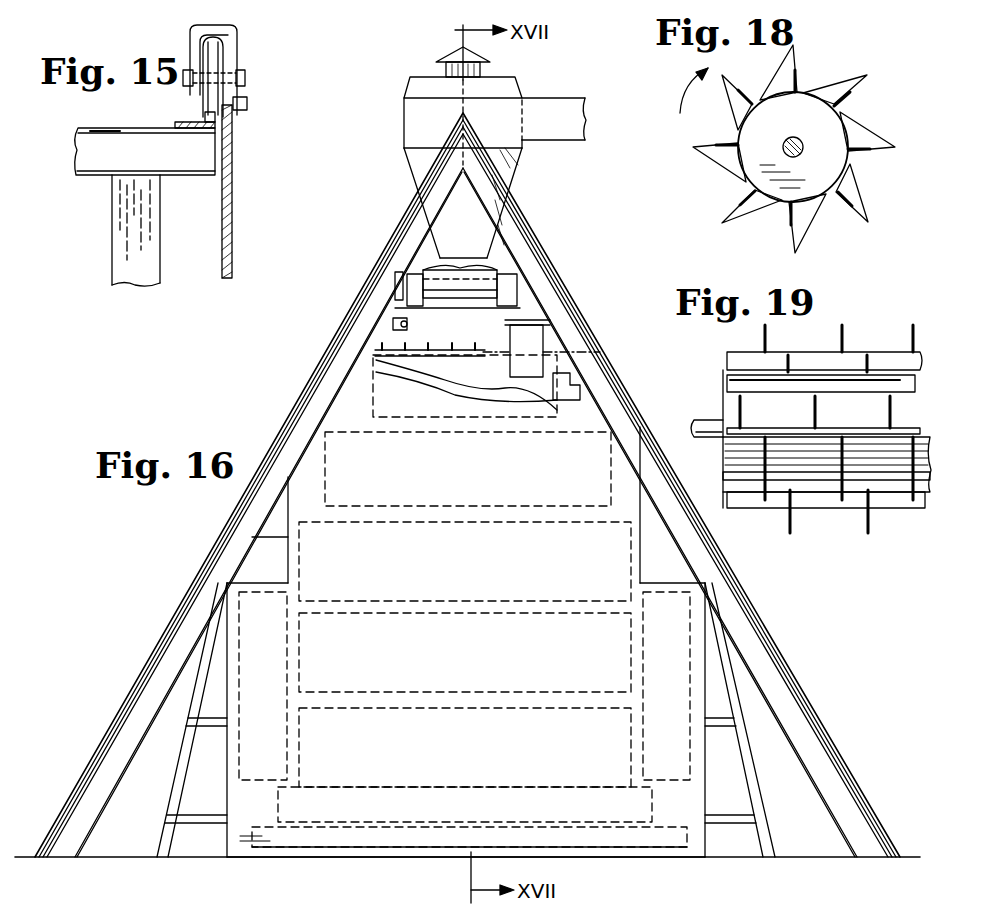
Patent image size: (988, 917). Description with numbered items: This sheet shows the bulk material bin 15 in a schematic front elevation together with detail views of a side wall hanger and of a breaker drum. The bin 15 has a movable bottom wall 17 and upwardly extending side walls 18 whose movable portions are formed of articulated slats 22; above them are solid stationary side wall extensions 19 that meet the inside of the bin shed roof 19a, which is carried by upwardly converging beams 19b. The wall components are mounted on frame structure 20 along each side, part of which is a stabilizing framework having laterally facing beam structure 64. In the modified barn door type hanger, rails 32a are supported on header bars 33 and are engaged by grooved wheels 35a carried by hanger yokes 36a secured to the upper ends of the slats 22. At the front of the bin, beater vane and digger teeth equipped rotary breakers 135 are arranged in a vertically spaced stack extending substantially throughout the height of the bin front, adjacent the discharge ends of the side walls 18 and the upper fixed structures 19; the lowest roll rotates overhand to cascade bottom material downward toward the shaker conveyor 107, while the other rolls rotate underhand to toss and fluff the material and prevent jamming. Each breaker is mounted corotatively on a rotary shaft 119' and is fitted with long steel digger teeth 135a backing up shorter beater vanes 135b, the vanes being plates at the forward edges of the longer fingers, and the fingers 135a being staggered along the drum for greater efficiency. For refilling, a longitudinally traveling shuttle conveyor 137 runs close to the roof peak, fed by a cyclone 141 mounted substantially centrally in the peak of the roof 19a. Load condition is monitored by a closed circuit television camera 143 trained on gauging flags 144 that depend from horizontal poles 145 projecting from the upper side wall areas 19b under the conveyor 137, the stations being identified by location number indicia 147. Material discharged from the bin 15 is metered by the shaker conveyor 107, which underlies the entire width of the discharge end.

In FIG. 16, the bin 15 is at (467, 485).
In FIG. 16, the bottom wall 17 is at (650, 801).
In FIG. 16, the side walls 18 is at (287, 645).
In FIG. 16, the side wall extensions 19 is at (285, 521).
In FIG. 16, the bin shed roof 19a is at (360, 292).
In FIG. 16, the upwardly converging beams 19b is at (393, 262).
In FIG. 16, the frame structure 20 is at (541, 351).
In FIG. 15, the articulated slats 22 is at (232, 226).
In FIG. 15, the rails 32a is at (206, 112).
In FIG. 15, the header bars 33 is at (96, 166).
In FIG. 15, the grooved wheels 35a is at (215, 46).
In FIG. 15, the hanger yokes 36a is at (240, 60).
In FIG. 16, the beam structure 64 is at (181, 770).
In FIG. 16, the shaker conveyor 107 is at (355, 838).
In FIG. 18, the rotary shaft 119' is at (751, 167).
In FIG. 19, the rotary shaft 119' is at (698, 408).
In FIG. 16, the rotary breakers 135 is at (313, 517).
In FIG. 18, the rotary breakers 135 is at (772, 110).
In FIG. 19, the rotary breakers 135 is at (724, 374).
In FIG. 18, the digger teeth 135a is at (732, 106).
In FIG. 19, the digger teeth 135a is at (912, 335).
In FIG. 18, the beater vanes 135b is at (843, 100).
In FIG. 19, the beater vanes 135b is at (852, 375).
In FIG. 16, the shuttle conveyor 137 is at (480, 300).
In FIG. 16, the cyclone 141 is at (408, 117).
In FIG. 16, the closed circuit television camera 143 is at (390, 325).
In FIG. 16, the flags 144 is at (545, 361).
In FIG. 16, the horizontal poles 145 is at (535, 316).
In FIG. 16, the location number indicia 147 is at (500, 390).